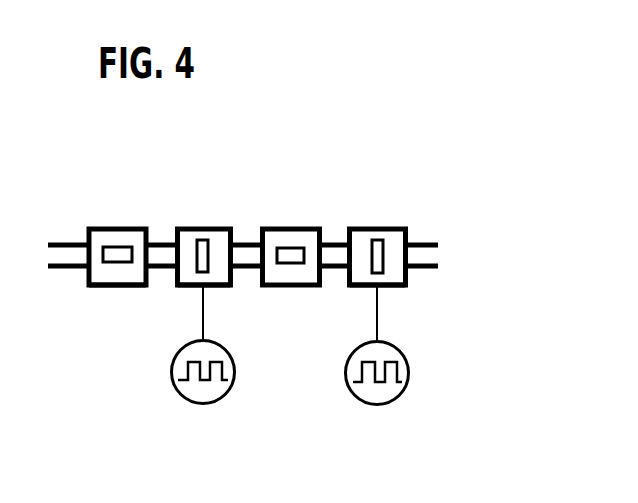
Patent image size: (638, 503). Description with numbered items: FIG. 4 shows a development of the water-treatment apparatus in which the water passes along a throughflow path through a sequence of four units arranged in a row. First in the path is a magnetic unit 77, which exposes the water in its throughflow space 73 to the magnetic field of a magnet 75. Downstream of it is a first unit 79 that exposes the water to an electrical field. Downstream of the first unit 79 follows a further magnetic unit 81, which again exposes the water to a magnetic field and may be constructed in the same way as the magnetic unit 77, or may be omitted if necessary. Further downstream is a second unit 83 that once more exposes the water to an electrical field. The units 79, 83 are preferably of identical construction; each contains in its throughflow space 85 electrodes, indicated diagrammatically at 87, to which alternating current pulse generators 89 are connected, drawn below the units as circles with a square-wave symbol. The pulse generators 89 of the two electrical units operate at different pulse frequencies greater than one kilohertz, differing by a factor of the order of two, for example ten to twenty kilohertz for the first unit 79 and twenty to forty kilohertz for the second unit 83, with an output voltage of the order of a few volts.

The throughflow space 73 is at (102, 287).
The magnet 75 is at (118, 249).
The magnetic unit 77 is at (128, 294).
The first unit 79 is at (192, 221).
The further magnetic unit 81 is at (282, 221).
The second unit 83 is at (393, 221).
The throughflow space 85 is at (218, 287).
The electrodes 87 is at (201, 239).
The alternating current pulse generators 89 is at (185, 401).